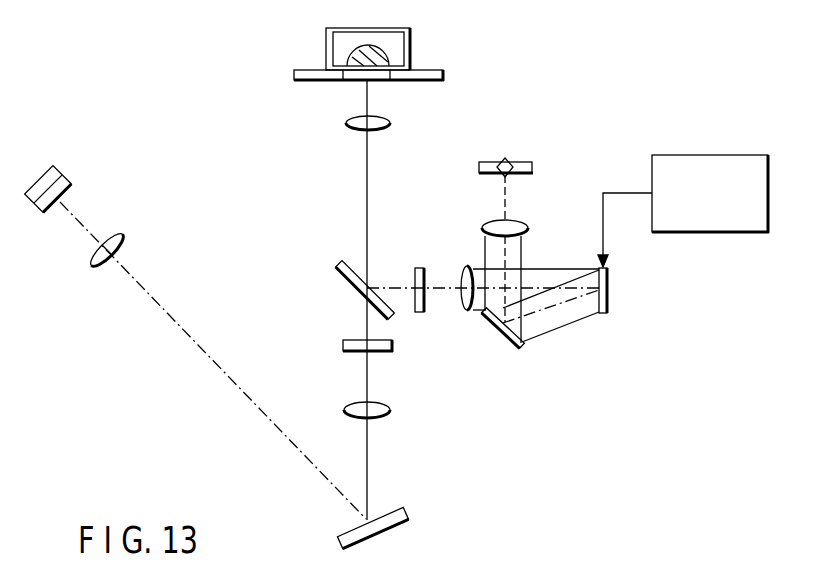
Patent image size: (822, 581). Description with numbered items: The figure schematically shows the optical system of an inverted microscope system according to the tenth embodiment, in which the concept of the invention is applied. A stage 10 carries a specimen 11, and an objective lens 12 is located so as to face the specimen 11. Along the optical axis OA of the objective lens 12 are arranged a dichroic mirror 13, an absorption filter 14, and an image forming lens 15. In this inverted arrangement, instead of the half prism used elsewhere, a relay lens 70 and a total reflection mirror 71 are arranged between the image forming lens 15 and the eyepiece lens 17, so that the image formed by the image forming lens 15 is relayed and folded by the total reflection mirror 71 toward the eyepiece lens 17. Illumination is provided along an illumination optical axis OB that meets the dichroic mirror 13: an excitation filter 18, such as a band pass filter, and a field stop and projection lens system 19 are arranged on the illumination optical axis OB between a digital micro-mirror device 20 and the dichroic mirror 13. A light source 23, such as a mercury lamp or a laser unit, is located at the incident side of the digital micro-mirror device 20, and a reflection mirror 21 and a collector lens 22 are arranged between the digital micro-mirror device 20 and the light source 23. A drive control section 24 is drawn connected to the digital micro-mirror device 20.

The stage 10 is at (434, 70).
The specimen 11 is at (352, 47).
The objective lens 12 is at (346, 123).
The dichroic mirror 13 is at (338, 277).
The absorption filter 14 is at (343, 345).
The image forming lens 15 is at (391, 410).
The eyepiece lens 17 is at (66, 170).
The excitation filter 18 is at (418, 267).
The field stop and projection lens system 19 is at (466, 313).
The digital micro-mirror device 20 is at (608, 286).
The reflection mirror 21 is at (514, 348).
The collector lens 22 is at (529, 228).
The light source 23 is at (517, 160).
The drive control section 24 is at (715, 155).
The relay lens 70 is at (126, 236).
The total reflection mirror 71 is at (410, 511).
The optical axis OA is at (366, 189).
The illumination optical axis OB is at (437, 292).